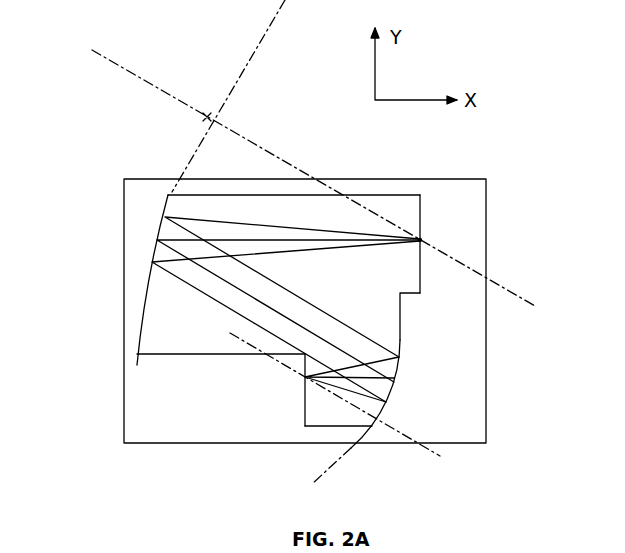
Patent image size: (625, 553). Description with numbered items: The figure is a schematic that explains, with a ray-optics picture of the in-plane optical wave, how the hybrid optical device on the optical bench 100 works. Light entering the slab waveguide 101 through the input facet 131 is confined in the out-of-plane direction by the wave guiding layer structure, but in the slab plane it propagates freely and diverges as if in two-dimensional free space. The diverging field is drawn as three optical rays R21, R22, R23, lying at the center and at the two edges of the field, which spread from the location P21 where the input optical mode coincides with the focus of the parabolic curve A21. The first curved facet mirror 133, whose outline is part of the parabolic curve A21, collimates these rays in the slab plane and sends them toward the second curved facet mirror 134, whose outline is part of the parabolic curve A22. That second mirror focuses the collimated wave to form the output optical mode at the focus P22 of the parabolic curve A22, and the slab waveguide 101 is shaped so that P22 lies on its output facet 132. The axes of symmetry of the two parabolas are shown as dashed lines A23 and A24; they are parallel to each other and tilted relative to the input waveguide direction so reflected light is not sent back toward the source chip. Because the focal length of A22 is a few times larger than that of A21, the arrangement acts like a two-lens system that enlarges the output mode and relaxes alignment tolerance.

The optical bench 100 is at (457, 382).
The slab waveguide 101 is at (294, 349).
The input facet 131 is at (305, 403).
The output facet 132 is at (422, 282).
The first curved facet mirror 133 is at (397, 383).
The second curved facet mirror 134 is at (145, 288).
The location of input optical mode P21 is at (305, 378).
The focus of parabolic curve A22 P22 is at (423, 238).
The optical ray R21 is at (245, 262).
The optical ray R22 is at (252, 297).
The optical ray R23 is at (240, 255).
The parabolic curve A21 is at (386, 430).
The parabolic curve A22 is at (190, 146).
The axis of symmetry A23 is at (378, 408).
The axis of symmetry A24 is at (270, 153).